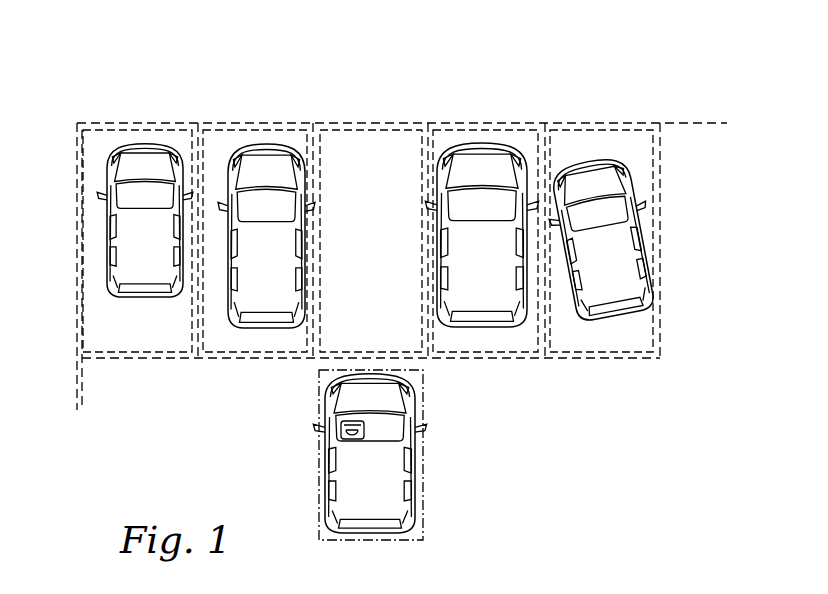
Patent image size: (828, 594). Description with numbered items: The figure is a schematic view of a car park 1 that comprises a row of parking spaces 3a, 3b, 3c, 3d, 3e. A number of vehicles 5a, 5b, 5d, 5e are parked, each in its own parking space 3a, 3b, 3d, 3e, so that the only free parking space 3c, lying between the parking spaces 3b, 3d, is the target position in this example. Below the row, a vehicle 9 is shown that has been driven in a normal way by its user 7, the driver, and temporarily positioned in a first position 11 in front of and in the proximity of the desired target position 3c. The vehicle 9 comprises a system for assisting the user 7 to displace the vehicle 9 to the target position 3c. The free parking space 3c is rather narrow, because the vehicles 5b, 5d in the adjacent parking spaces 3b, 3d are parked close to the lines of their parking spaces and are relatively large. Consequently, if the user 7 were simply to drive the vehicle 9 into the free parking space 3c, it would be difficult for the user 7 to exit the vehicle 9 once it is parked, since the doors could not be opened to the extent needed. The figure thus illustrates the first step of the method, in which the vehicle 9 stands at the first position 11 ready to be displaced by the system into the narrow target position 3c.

The car park 1 is at (114, 111).
The parking space 3a is at (120, 346).
The parking space 3b is at (230, 346).
The parking space 3c is at (380, 260).
The parking space 3d is at (458, 346).
The parking space 3e is at (580, 346).
The vehicle 5a is at (153, 251).
The vehicle 5b is at (278, 273).
The vehicle 5d is at (495, 268).
The vehicle 5e is at (623, 276).
The user 7 is at (341, 423).
The vehicle 9 is at (377, 483).
The first position 11 is at (421, 500).